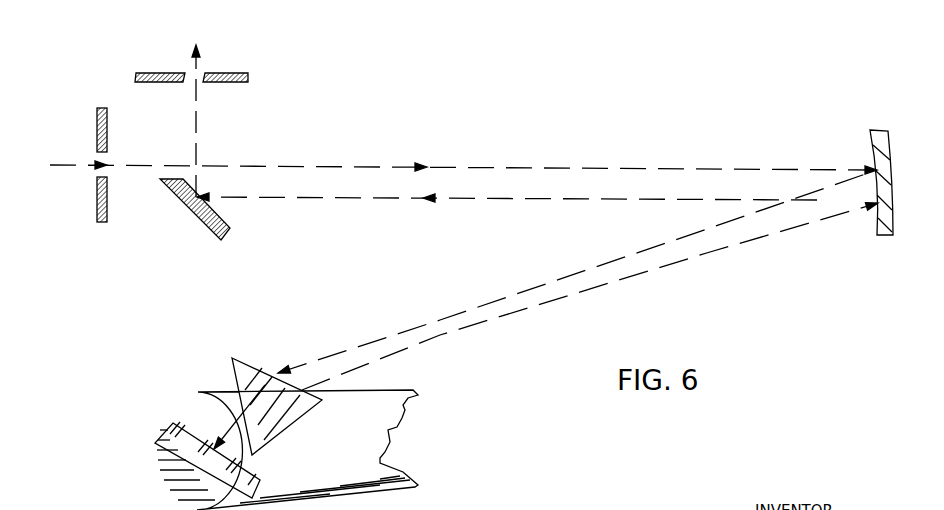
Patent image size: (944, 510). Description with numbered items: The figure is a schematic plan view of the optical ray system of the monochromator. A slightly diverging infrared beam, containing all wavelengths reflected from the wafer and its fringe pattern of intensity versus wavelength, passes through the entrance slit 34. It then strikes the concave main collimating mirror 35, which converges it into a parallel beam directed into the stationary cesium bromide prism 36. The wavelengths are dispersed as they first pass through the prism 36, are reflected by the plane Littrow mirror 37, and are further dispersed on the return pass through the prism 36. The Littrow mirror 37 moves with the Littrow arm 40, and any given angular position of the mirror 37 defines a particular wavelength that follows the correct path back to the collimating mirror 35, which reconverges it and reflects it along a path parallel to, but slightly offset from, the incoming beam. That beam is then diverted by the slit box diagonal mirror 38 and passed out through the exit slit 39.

The entrance slit 34 is at (102, 153).
The concave main collimating mirror 35 is at (875, 147).
The cesium bromide prism 36 is at (240, 380).
The plane Littrow mirror 37 is at (187, 433).
The slit box diagonal mirror 38 is at (222, 240).
The exit slit 39 is at (202, 70).
The Littrow arm 40 is at (415, 390).